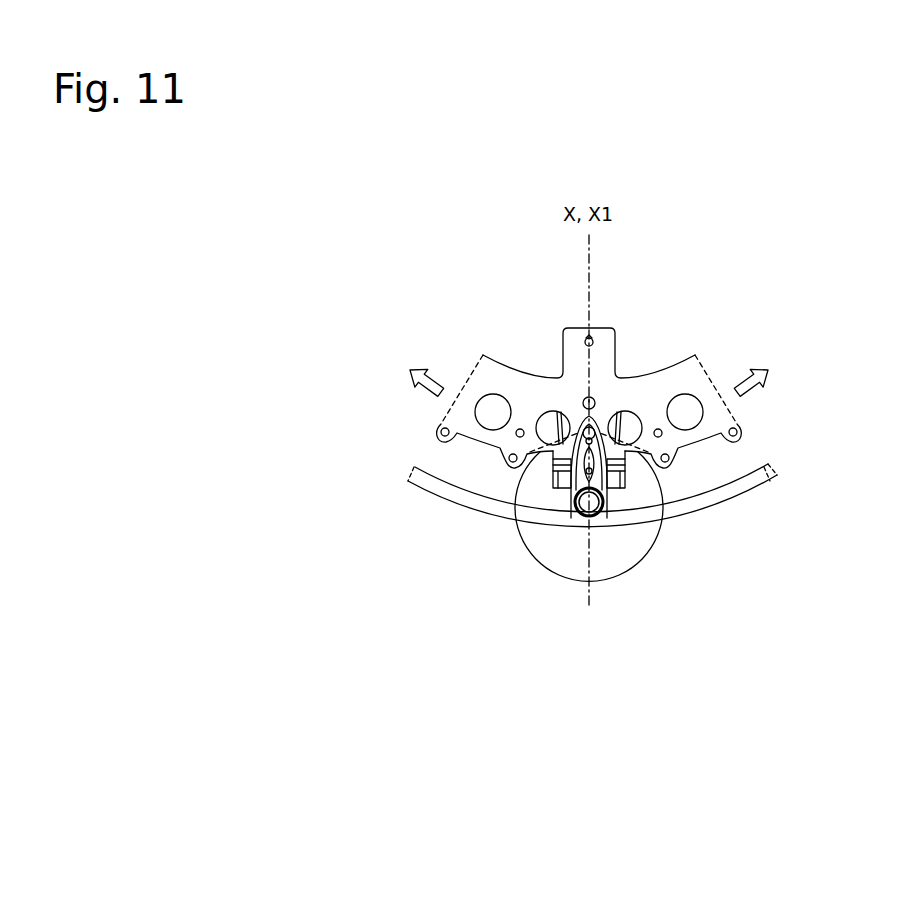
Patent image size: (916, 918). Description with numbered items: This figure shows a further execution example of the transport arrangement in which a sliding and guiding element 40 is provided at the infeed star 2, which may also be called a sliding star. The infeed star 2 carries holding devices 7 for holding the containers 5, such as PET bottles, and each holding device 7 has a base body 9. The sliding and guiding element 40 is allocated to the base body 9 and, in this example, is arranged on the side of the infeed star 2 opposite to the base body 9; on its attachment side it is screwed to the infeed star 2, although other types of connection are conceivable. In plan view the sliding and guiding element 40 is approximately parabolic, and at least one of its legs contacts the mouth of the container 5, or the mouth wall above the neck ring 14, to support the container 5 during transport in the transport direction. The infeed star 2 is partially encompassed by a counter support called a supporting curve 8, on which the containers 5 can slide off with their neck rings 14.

The infeed star 2 is at (589, 404).
The container 5 is at (630, 573).
The holding device 7 is at (481, 561).
The base body 9 is at (554, 493).
The supporting curve 8 is at (443, 495).
The neck ring 14 is at (583, 514).
The sliding and guiding element 40 is at (620, 502).